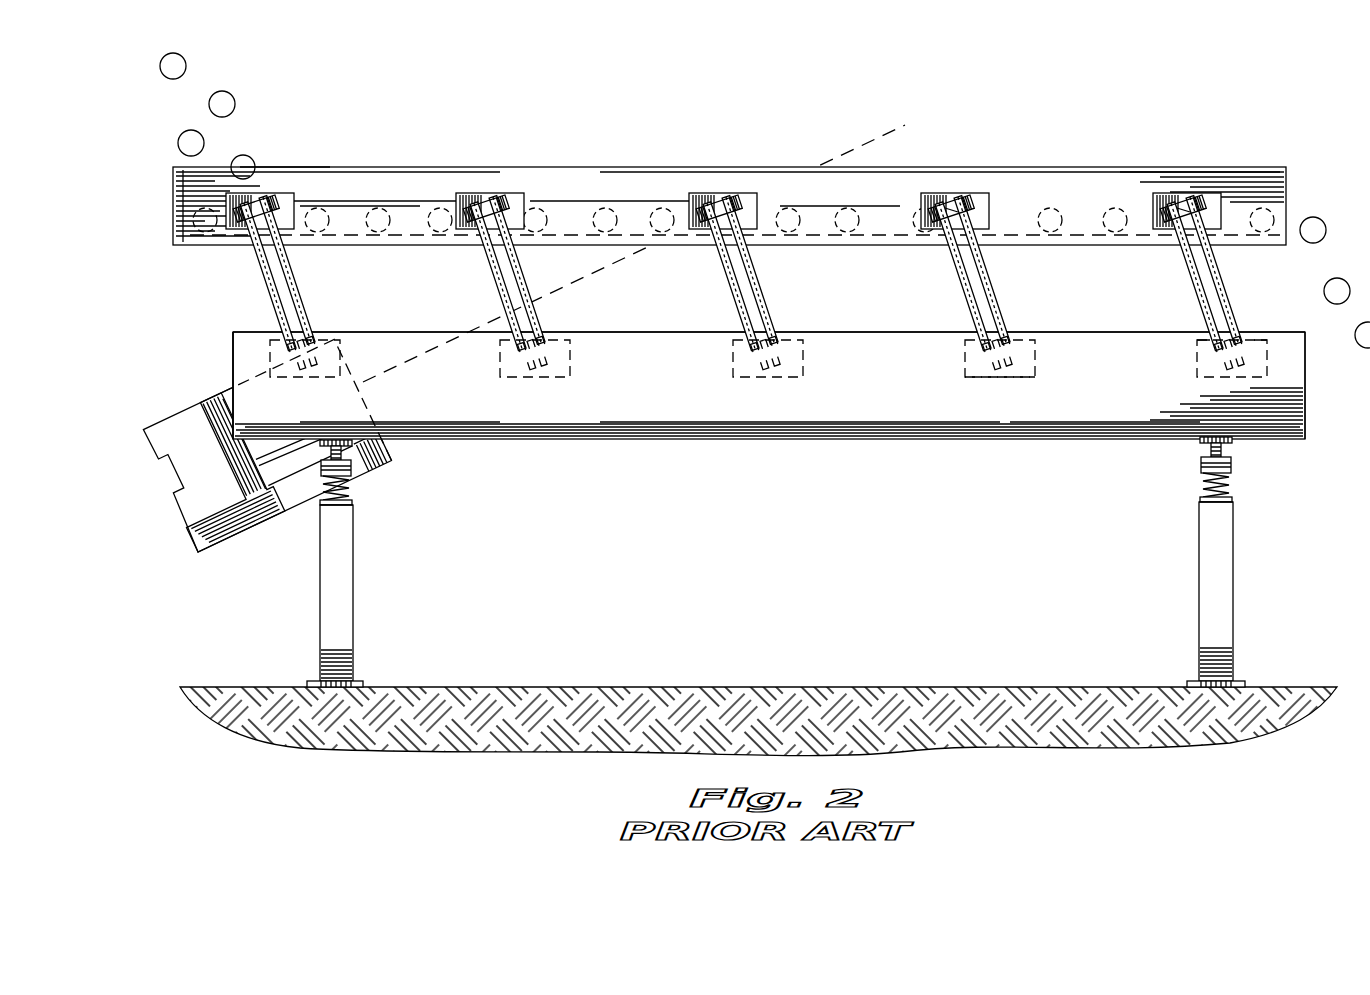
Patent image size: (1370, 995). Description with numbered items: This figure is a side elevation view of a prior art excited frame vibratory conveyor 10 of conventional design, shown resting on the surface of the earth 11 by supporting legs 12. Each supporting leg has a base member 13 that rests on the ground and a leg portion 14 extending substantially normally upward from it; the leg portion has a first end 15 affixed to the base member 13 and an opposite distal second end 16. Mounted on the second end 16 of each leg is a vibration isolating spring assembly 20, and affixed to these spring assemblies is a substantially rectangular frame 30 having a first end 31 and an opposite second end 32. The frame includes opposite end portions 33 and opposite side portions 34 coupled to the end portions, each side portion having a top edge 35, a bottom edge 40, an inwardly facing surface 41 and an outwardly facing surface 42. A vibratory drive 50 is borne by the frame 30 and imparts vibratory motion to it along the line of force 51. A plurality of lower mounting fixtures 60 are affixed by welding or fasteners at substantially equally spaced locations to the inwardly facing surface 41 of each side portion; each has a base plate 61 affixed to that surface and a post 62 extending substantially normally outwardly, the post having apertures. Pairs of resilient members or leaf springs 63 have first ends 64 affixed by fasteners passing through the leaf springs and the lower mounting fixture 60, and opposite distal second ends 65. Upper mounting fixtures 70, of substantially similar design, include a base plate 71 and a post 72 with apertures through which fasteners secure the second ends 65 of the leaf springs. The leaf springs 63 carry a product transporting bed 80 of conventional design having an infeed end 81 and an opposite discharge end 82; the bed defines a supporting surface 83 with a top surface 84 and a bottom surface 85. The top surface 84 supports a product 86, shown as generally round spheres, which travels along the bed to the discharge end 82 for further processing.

The prior art excited frame vibratory conveyor 10 is at (756, 404).
The surface of the earth 11 is at (848, 686).
The supporting legs 12 is at (782, 595).
The base member 13 is at (364, 684).
The leg portion 14 is at (356, 598).
The first end 15 is at (326, 665).
The second end 16 is at (328, 538).
The vibration isolating spring assembly 20 is at (358, 484).
The frame 30 is at (761, 401).
The first end 31 is at (218, 322).
The second end 32 is at (1322, 400).
The end portions 33 is at (232, 352).
The side portions 34 is at (906, 391).
The top edge 35 is at (878, 330).
The bottom edge 40 is at (622, 447).
The inwardly facing surface 41 is at (1118, 350).
The outwardly facing surface 42 is at (660, 402).
The vibratory drive 50 is at (193, 450).
The line of force 51 is at (568, 288).
The lower mounting fixtures 60 is at (766, 304).
The base plate 61 is at (735, 355).
The post 62 is at (1030, 378).
The leaf springs 63 is at (738, 284).
The first ends 64 is at (1205, 333).
The second ends 65 is at (960, 205).
The upper mounting fixtures 70 is at (723, 164).
The base plate 71 is at (748, 198).
The post 72 is at (490, 194).
The product transporting bed 80 is at (765, 200).
The infeed end 81 is at (270, 168).
The discharge end 82 is at (1290, 186).
The supporting surface 83 is at (1010, 238).
The top surface 84 is at (1080, 238).
The bottom surface 85 is at (1058, 245).
The product 86 is at (185, 70).